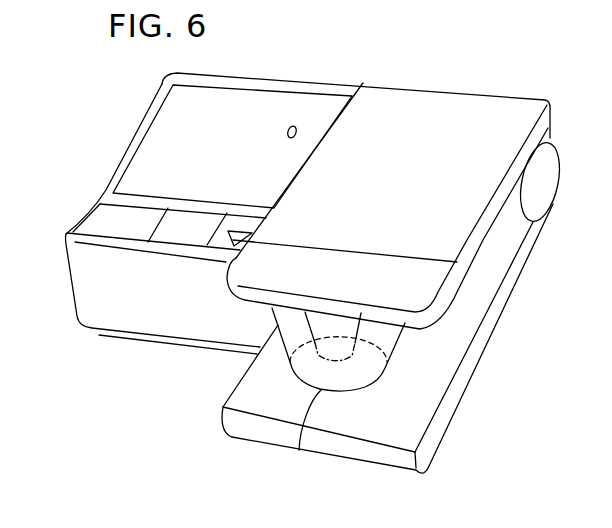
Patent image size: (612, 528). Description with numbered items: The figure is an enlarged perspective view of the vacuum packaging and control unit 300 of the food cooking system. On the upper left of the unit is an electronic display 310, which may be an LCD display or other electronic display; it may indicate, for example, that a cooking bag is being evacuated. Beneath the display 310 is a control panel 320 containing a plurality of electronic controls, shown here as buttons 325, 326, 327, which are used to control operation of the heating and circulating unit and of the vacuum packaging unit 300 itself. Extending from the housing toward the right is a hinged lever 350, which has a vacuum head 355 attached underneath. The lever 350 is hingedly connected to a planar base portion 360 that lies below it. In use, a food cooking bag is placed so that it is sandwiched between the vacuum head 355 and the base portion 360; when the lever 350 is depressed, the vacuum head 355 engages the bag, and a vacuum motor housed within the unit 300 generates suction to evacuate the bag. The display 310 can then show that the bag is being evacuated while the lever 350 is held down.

The vacuum packaging and control unit 300 is at (368, 57).
The electronic display 310 is at (171, 106).
The control panel 320 is at (133, 204).
The button 325 is at (97, 232).
The button 326 is at (180, 242).
The button 327 is at (224, 245).
The hinged lever 350 is at (455, 260).
The vacuum head 355 is at (300, 440).
The planar base portion 360 is at (417, 396).